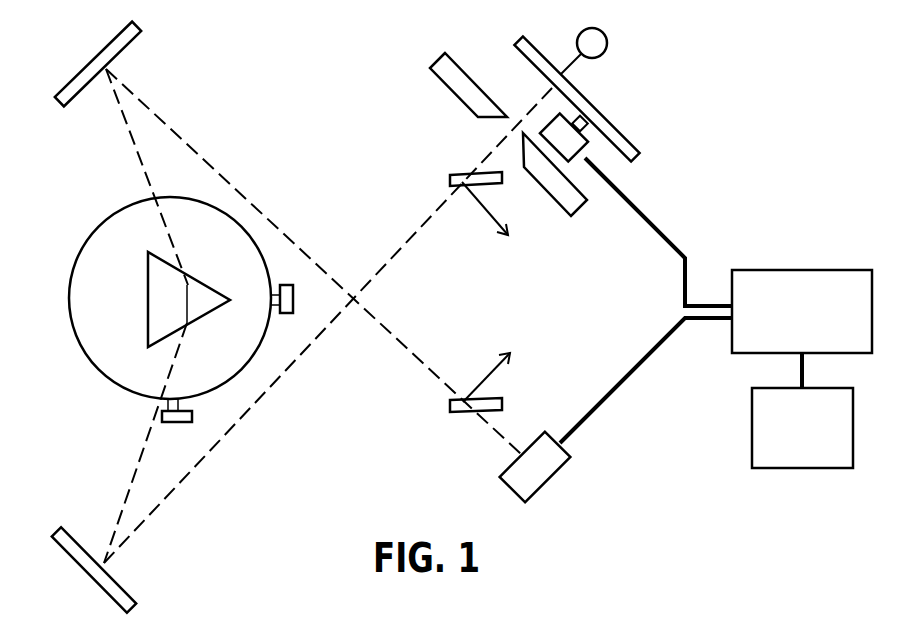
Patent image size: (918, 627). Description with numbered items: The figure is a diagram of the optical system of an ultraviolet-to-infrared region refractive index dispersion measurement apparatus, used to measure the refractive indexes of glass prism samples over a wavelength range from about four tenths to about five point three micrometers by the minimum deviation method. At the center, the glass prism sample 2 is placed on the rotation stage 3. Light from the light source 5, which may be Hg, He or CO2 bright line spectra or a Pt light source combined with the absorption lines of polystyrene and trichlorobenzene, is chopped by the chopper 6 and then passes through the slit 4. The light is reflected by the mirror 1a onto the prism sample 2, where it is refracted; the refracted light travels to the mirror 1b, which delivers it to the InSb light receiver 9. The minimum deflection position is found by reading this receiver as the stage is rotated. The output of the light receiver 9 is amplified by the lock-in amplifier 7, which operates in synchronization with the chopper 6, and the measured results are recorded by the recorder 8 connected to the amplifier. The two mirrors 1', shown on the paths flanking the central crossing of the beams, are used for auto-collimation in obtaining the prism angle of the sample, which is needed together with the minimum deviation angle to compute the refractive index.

The mirror 1a is at (128, 593).
The mirror 1b is at (142, 32).
The mirrors 1' is at (454, 303).
The glass prism sample 2 is at (147, 287).
The rotation stage 3 is at (91, 361).
The slit 4 is at (507, 117).
The light source 5 is at (607, 43).
The chopper 6 is at (634, 148).
The lock-in amplifier 7 is at (791, 326).
The recorder 8 is at (791, 443).
The InSb light receiver 9 is at (553, 478).